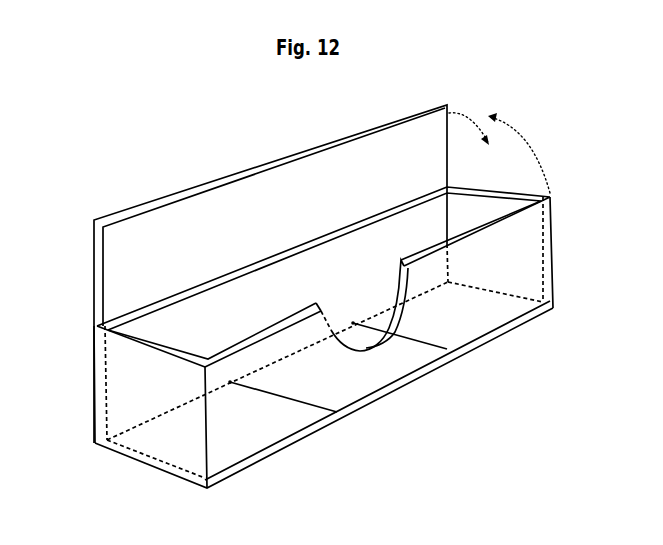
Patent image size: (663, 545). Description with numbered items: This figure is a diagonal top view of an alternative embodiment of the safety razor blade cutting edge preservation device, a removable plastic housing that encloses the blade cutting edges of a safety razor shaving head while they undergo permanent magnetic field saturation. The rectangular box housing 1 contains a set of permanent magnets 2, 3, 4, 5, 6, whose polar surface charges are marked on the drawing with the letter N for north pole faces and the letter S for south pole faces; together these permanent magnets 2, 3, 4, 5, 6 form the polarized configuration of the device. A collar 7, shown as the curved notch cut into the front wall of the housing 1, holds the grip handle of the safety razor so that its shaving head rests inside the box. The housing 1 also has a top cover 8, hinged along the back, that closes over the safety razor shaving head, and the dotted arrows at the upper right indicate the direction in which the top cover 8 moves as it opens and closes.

The rectangular box housing 1 is at (97, 344).
The permanent magnet 2 is at (165, 448).
The permanent magnet 3 is at (282, 425).
The permanent magnet 4 is at (390, 372).
The permanent magnet 5 is at (508, 313).
The permanent magnet 6 is at (537, 245).
The collar 7 is at (400, 272).
The top cover 8 is at (333, 158).